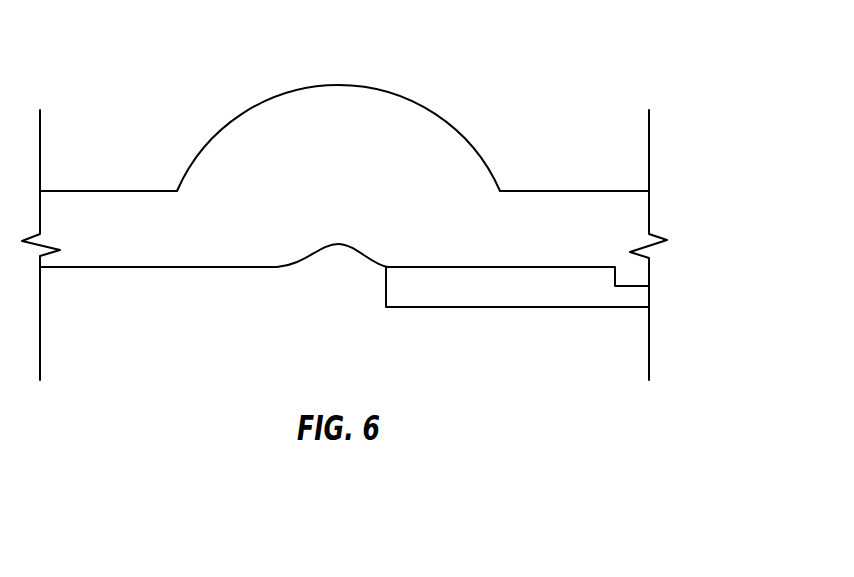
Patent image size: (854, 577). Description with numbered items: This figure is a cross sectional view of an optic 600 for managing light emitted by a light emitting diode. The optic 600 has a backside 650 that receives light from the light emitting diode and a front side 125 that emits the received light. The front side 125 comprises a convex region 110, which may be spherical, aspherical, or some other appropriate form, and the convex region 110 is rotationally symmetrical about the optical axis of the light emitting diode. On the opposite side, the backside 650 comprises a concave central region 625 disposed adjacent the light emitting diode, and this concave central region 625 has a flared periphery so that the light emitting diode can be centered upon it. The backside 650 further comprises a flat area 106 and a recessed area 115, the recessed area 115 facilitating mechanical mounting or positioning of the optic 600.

The optic 600 is at (623, 40).
The convex region 110 is at (421, 99).
The front side 125 is at (563, 184).
The flat area 106 is at (92, 280).
The backside 650 is at (162, 293).
The concave central region 625 is at (338, 280).
The recessed area 115 is at (558, 283).